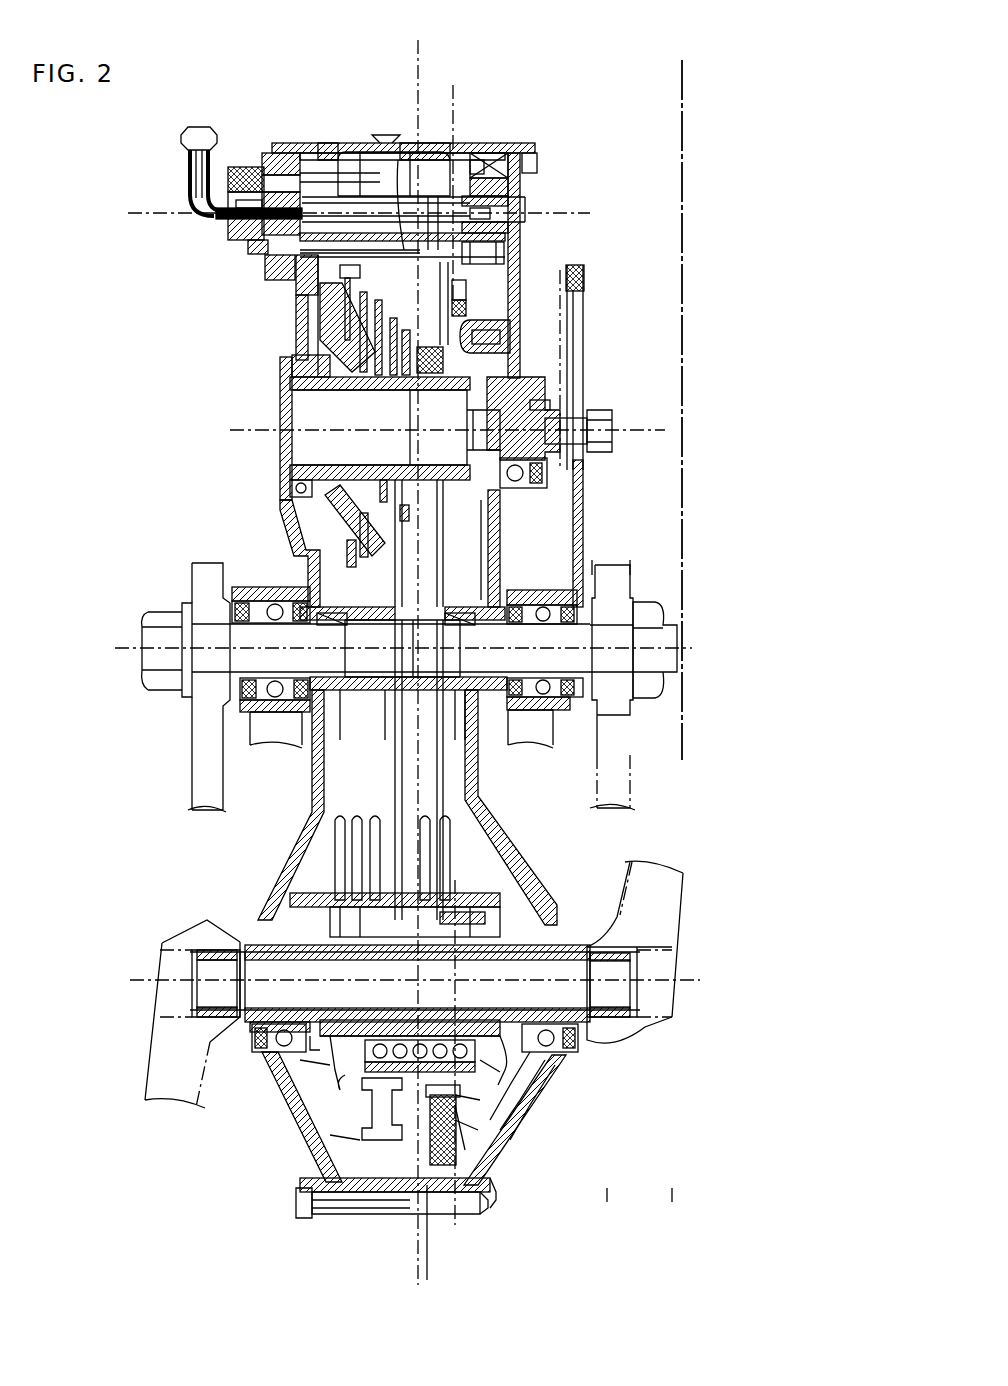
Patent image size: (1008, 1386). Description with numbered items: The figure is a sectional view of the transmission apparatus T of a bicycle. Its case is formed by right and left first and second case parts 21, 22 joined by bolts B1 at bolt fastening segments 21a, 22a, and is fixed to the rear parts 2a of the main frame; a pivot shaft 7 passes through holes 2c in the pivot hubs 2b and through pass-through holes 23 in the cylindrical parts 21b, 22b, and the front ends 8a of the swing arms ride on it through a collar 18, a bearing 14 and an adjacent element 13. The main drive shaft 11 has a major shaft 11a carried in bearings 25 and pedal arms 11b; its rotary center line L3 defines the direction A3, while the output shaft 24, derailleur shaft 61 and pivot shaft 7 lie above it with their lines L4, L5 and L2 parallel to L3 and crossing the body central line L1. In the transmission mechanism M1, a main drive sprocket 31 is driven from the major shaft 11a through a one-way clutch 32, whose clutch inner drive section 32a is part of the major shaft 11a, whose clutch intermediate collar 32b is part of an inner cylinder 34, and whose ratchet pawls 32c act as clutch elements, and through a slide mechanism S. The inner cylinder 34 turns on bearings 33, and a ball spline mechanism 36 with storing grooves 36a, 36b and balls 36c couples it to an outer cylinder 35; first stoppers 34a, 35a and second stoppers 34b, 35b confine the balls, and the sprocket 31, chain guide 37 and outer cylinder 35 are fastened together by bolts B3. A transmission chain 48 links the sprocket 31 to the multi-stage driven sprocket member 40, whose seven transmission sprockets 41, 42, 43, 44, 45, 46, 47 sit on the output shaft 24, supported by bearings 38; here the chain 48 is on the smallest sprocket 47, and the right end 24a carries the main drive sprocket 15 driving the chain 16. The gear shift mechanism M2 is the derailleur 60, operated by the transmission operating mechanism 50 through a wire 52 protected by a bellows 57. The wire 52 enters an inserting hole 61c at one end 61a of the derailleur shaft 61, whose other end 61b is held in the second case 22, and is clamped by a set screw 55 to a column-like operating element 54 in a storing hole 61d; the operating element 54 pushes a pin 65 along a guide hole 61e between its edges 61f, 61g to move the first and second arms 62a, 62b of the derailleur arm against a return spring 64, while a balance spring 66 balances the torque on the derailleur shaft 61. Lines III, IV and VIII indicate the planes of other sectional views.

The body central line L1 is at (416, 68).
The central axis line L2 is at (120, 648).
The rotary center line L3 is at (142, 980).
The rotary center line L4 is at (250, 430).
The central axis line L5 is at (128, 213).
The section line III is at (691, 96).
The section line IV is at (464, 882).
The section line VIII is at (464, 92).
The transmission apparatus T is at (189, 364).
The transmission mechanism M1 is at (484, 853).
The gear shift mechanism M2 is at (245, 95).
The slide mechanism S is at (330, 1135).
The bolts B1 is at (296, 1200).
The bolts B3 is at (400, 1110).
The rotary center line direction A3 is at (607, 1195).
The rear part 2a is at (205, 770).
The pivot hub 2b is at (663, 690).
The holes 2c is at (637, 635).
The pivot shaft 7 is at (358, 700).
The front end 8a is at (215, 560).
The main drive shaft 11 is at (228, 1040).
The major shaft 11a is at (640, 1035).
The pedal arms 11b is at (690, 933).
The bearing 13 is at (345, 612).
The bearing 14 is at (268, 585).
The main drive sprocket 15 is at (578, 500).
The chain 16 is at (584, 335).
The collar 18 is at (275, 628).
The first case part 21 is at (330, 133).
The bolt fastening segment 21a is at (330, 1220).
The cylindrical part 21b is at (350, 700).
The second case part 22 is at (388, 133).
The bolt fastening segment 22a is at (382, 1220).
The cylindrical part 22b is at (386, 700).
The pass-through holes 23 is at (388, 550).
The output shaft 24 is at (280, 453).
The right end 24a is at (570, 395).
The bearings 25 is at (272, 282).
The main drive sprocket 31 is at (335, 857).
The one-way clutch 32 is at (620, 1100).
The clutch inner drive section 32a is at (540, 1065).
The clutch intermediate collar 32b is at (535, 1120).
The ratchet pawls 32c is at (535, 1095).
The bearings 33 is at (350, 1022).
The inner cylinder 34 is at (402, 1022).
The first stopper 34a is at (505, 1010).
The second stopper 34b is at (303, 1022).
The outer cylinder 35 is at (372, 1082).
The first stopper 35a is at (360, 1075).
The second stopper 35b is at (520, 1090).
The ball spline mechanism 36 is at (558, 1160).
The storing groove 36a is at (470, 1160).
The storing groove 36b is at (470, 1110).
The balls 36c is at (470, 1135).
The chain guide 37 is at (450, 840).
The bearings 38 is at (282, 502).
The multi-stage driven sprocket member 40 is at (300, 545).
The transmission sprocket 41 is at (290, 305).
The transmission sprocket 42 is at (290, 328).
The transmission sprocket 43 is at (300, 350).
The transmission sprocket 44 is at (442, 285).
The transmission sprocket 45 is at (465, 325).
The transmission sprocket 46 is at (420, 515).
The transmission sprocket 47 is at (430, 500).
The transmission chain 48 is at (228, 312).
The transmission operating mechanism 50 is at (215, 152).
The wire 52 is at (188, 160).
The operating element 54 is at (498, 212).
The set screw 55 is at (512, 252).
The bellows 57 is at (178, 134).
The derailleur 60 is at (270, 152).
The derailleur shaft 61 is at (345, 240).
The one end 61a is at (242, 200).
The other end 61b is at (512, 185).
The inserting hole 61c is at (260, 240).
The storing hole 61d is at (412, 290).
The guide hole 61e is at (428, 150).
The one edge 61f is at (535, 145).
The other edge 61g is at (408, 140).
The first arm 62a is at (432, 245).
The second arm 62b is at (470, 150).
The return spring 64 is at (388, 150).
The pin 65 is at (505, 145).
The balance spring 66 is at (260, 282).